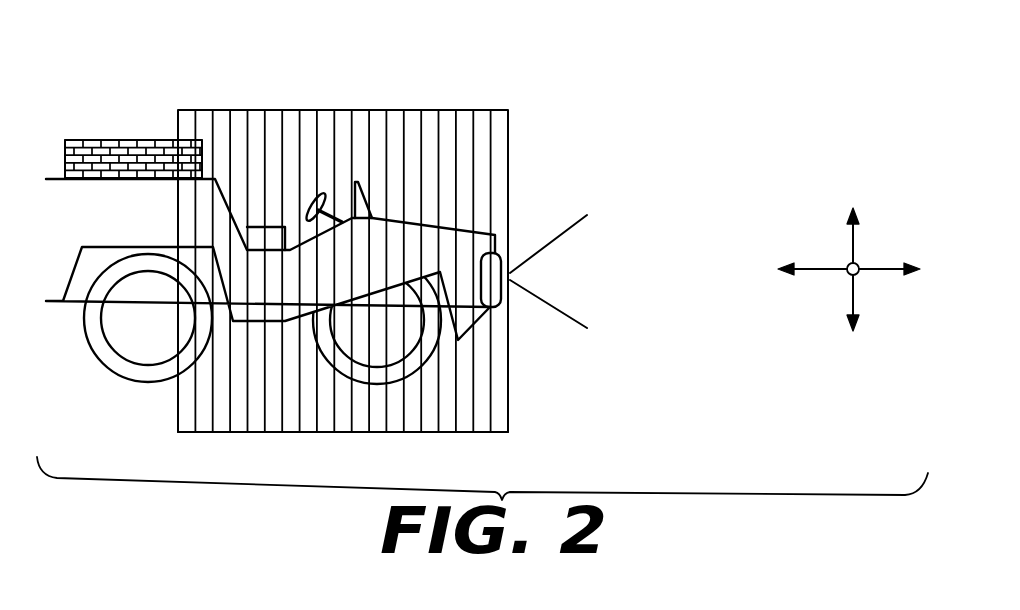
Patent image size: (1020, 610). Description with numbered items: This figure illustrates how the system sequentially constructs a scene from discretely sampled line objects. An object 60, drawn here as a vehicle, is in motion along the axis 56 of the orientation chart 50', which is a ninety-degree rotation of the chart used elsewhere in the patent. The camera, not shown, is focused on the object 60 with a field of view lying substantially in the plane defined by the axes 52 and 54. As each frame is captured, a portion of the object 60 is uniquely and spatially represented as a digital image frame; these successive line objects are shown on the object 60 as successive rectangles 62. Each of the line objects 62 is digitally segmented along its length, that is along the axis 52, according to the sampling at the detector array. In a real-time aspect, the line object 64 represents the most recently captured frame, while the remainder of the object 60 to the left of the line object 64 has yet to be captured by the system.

The orientation chart 50' is at (799, 225).
The axis 52 is at (854, 245).
The axis 54 is at (847, 274).
The axis 56 is at (875, 275).
The object 60 is at (105, 140).
The line objects 62 is at (410, 433).
The line object 64 is at (185, 412).